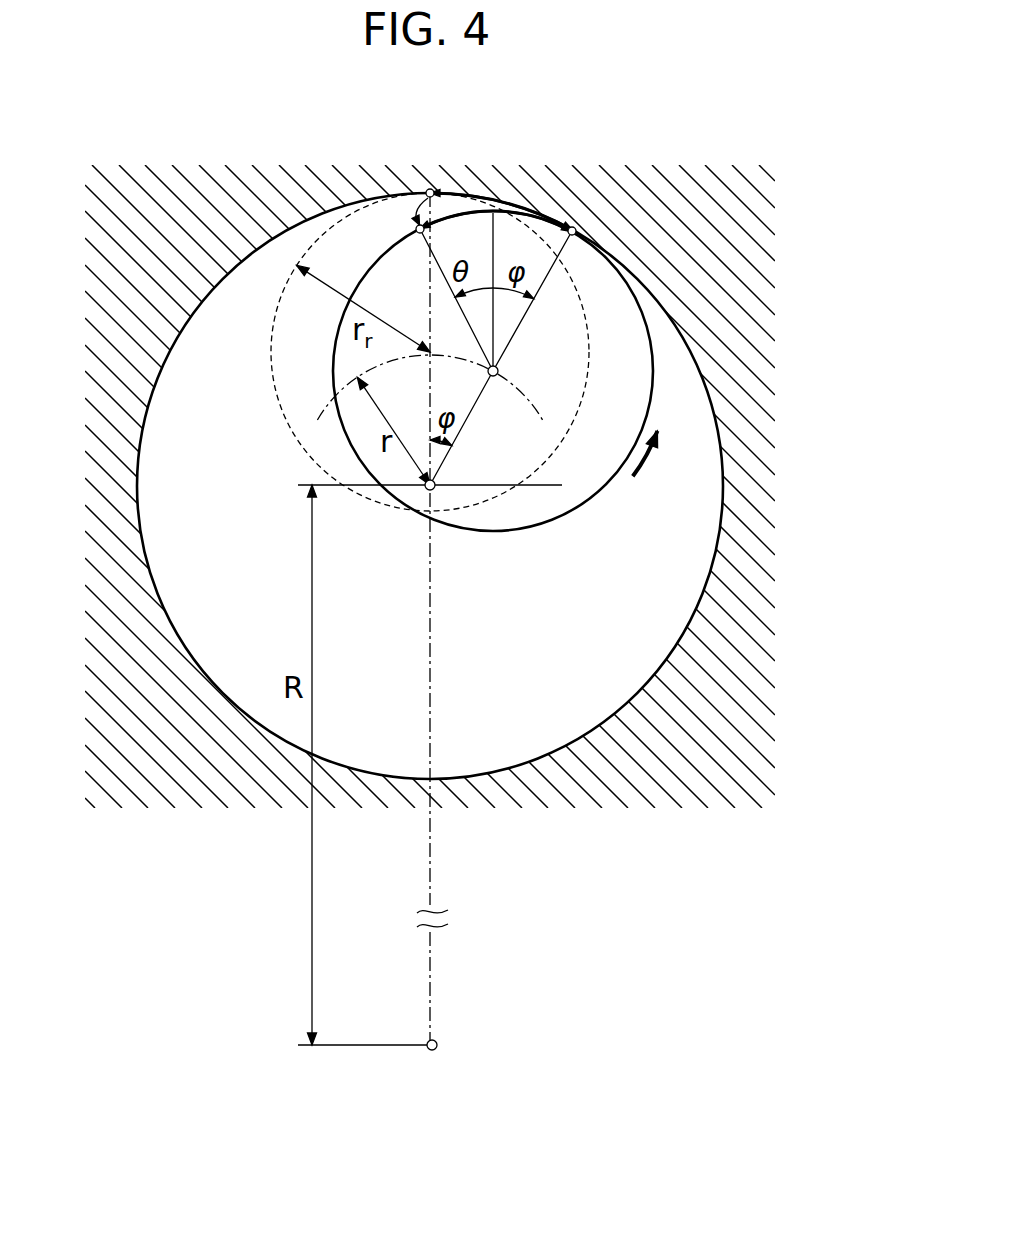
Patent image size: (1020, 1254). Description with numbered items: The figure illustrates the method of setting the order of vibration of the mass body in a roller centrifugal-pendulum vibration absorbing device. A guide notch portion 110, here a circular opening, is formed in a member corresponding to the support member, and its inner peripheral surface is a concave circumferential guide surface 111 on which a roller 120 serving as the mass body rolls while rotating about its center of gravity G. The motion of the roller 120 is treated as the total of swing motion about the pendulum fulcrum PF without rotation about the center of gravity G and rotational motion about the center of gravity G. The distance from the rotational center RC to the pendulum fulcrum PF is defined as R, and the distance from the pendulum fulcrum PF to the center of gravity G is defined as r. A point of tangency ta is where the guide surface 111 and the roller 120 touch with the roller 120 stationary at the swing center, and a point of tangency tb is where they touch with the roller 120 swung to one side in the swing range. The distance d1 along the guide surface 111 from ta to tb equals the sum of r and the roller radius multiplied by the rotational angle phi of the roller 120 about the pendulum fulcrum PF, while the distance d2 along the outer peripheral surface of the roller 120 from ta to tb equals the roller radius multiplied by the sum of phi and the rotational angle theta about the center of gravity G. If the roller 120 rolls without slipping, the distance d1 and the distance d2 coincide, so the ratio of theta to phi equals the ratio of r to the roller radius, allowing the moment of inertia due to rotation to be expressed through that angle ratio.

The guide notch portion 110 is at (508, 616).
The guide surface 111 is at (183, 327).
The roller 120 is at (605, 493).
The point of tangency ta is at (418, 227).
The point of tangency tb is at (578, 227).
The distance along the guide surface d1 is at (512, 203).
The distance along the outer peripheral surface of the roller d2 is at (477, 211).
The center of gravity G is at (496, 378).
The pendulum fulcrum PF is at (430, 490).
The rotational center RC is at (437, 1050).